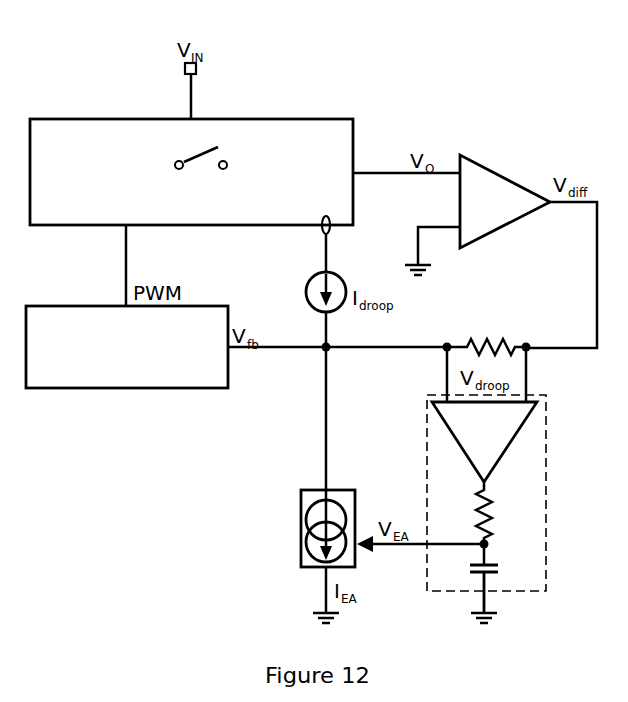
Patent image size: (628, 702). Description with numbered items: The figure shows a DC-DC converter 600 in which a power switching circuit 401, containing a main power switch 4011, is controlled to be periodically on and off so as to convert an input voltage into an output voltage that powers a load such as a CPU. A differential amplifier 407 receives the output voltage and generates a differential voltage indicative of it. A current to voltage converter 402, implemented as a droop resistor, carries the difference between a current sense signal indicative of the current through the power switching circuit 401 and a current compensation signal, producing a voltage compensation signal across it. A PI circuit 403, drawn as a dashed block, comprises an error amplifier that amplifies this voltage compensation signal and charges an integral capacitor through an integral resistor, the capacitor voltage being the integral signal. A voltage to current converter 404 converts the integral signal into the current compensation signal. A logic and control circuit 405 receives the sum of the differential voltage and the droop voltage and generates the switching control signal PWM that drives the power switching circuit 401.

The DC-DC converter 600 is at (547, 78).
The power switching circuit 401 is at (191, 172).
The main power switch 4011 is at (204, 175).
The logic and control circuit 405 is at (76, 299).
The differential amplifier 407 is at (477, 215).
The current to voltage converter 402 is at (479, 337).
The PI circuit 403 is at (548, 532).
The voltage to current converter 404 is at (300, 534).